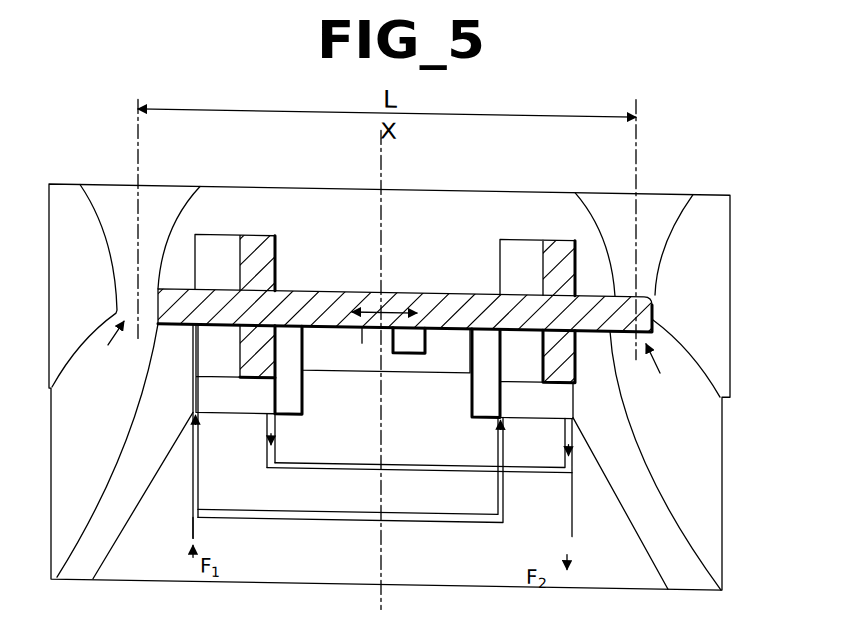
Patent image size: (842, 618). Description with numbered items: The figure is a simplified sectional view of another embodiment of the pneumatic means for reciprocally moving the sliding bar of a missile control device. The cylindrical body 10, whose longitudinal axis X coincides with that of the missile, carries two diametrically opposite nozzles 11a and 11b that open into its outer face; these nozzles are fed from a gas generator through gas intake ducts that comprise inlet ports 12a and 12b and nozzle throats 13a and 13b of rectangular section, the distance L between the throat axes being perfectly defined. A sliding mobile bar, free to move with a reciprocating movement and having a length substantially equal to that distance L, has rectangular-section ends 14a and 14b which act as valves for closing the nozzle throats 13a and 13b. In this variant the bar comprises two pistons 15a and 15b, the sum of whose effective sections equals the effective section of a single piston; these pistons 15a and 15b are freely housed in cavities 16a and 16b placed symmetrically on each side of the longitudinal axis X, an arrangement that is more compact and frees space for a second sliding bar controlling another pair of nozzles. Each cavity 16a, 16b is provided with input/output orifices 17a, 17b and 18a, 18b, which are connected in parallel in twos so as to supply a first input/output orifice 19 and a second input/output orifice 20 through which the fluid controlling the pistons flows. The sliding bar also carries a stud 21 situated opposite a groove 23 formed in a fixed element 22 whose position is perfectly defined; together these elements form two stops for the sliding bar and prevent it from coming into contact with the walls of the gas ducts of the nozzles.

The cylindrical body 10 is at (730, 278).
The nozzle 11a is at (726, 464).
The nozzle 11b is at (50, 468).
The inlet port 12a is at (672, 185).
The inlet port 12b is at (106, 184).
The nozzle throat 13a is at (673, 371).
The nozzle throat 13b is at (106, 350).
The end of sliding bar 14a is at (632, 303).
The end of sliding bar 14b is at (168, 301).
The piston 15a is at (543, 262).
The piston 15b is at (246, 262).
The cavity 16a is at (523, 352).
The cavity 16b is at (205, 356).
The input/output orifice 17a is at (498, 410).
The input/output orifice 17b is at (198, 413).
The input/output orifice 18a is at (565, 410).
The input/output orifice 18b is at (278, 411).
The first input/output orifice 19 is at (193, 533).
The second input/output orifice 20 is at (575, 530).
The stud 21 is at (427, 339).
The fixed element 22 is at (372, 366).
The groove 23 is at (362, 338).